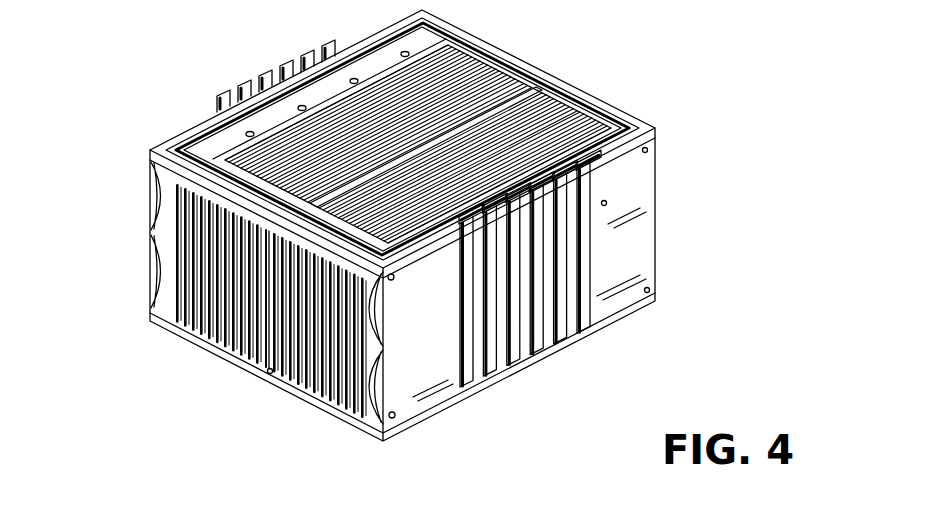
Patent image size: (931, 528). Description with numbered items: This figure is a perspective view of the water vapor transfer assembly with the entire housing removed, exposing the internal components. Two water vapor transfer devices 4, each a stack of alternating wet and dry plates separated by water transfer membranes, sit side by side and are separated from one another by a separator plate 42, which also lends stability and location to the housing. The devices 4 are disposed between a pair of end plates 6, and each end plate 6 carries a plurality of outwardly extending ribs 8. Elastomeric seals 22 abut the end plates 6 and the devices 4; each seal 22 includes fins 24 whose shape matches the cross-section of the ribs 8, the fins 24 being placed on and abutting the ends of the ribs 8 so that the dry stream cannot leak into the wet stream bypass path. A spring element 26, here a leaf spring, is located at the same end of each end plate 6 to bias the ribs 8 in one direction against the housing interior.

The water vapor transfer device 4 is at (458, 63).
The end plate 6 is at (157, 296).
The rib 8 is at (251, 88).
The elastomeric seal 22 is at (633, 124).
The fin 24 is at (586, 193).
The spring element 26 is at (150, 256).
The separator plate 42 is at (515, 96).